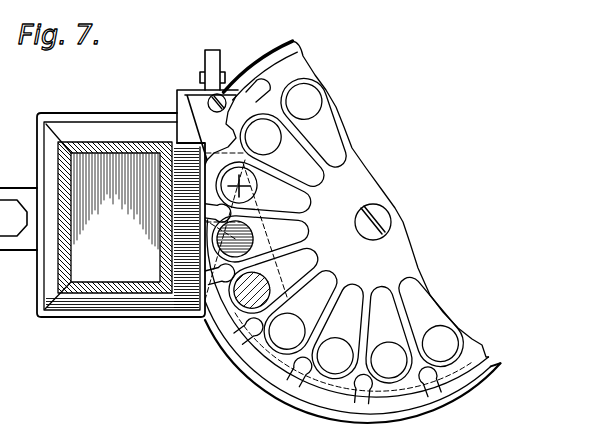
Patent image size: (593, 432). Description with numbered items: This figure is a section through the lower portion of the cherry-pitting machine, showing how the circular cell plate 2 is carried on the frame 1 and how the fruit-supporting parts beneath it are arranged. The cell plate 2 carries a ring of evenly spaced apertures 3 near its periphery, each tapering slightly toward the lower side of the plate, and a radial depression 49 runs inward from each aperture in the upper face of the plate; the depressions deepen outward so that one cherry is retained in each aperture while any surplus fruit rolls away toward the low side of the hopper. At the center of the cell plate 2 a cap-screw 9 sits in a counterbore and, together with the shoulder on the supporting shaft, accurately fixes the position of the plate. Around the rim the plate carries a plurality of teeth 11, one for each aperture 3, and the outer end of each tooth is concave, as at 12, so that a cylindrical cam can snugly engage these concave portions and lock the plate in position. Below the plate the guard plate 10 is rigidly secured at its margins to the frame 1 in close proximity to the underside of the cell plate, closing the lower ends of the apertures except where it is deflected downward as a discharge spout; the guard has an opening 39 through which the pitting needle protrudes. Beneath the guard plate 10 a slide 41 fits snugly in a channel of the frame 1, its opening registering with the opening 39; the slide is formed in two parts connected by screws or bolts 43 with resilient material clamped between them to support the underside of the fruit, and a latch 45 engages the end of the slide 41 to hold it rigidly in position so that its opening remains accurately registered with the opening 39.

The frame 1 is at (494, 376).
The cell plate 2 is at (339, 222).
The apertures 3 is at (278, 348).
The cap-screw 9 is at (356, 216).
The guard plate 10 is at (427, 382).
The teeth 11 is at (465, 360).
The concave outer end of tooth 12 is at (453, 383).
The opening in lower guard plate 39 is at (250, 187).
The slide 41 is at (230, 96).
The screws or bolts 43 is at (177, 95).
The latch 45 is at (207, 63).
The radial depression 49 is at (377, 296).